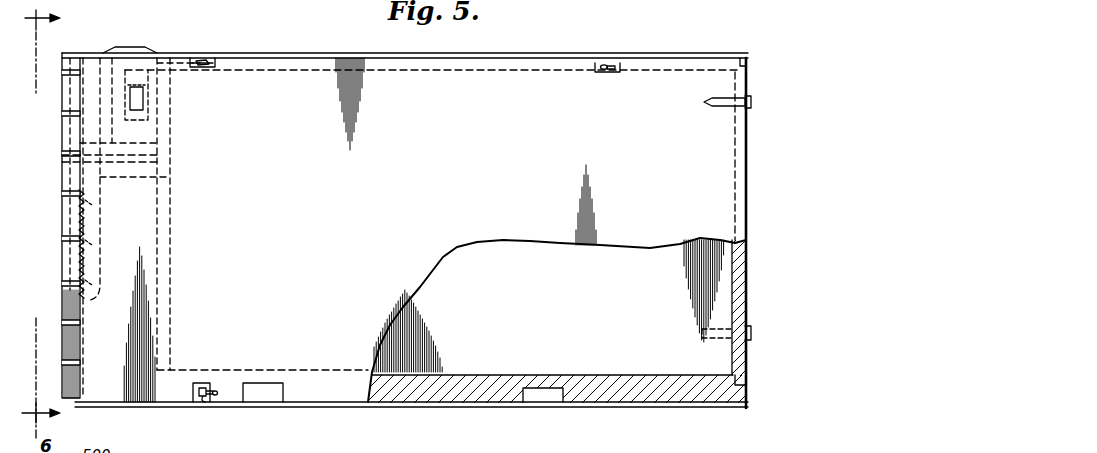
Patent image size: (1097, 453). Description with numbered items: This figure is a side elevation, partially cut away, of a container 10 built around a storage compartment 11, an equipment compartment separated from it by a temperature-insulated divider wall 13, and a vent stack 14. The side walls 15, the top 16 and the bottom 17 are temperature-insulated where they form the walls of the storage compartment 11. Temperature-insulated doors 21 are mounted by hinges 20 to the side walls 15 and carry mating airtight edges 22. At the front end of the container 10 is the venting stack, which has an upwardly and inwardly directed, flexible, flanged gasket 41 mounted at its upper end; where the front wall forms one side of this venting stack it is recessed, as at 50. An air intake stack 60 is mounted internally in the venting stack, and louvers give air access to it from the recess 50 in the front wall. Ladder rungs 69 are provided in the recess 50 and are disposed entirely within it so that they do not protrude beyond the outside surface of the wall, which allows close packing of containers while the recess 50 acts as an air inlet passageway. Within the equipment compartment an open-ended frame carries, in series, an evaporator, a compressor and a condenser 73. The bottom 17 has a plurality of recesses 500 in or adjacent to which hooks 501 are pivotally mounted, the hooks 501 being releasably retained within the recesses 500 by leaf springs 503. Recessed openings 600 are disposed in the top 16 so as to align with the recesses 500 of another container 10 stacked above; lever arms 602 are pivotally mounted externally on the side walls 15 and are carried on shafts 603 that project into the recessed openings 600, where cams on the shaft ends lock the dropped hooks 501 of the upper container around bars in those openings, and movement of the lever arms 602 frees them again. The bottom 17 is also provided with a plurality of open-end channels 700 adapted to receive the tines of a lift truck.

The container 10 is at (507, 95).
The storage compartment 11 is at (465, 331).
The divider wall 13 is at (170, 245).
The vent stack 14 is at (140, 207).
The side walls 15 is at (757, 257).
The top 16 is at (646, 58).
The bottom 17 is at (655, 402).
The hinges 20 is at (750, 105).
The doors 21 is at (742, 308).
The airtight edges 22 is at (742, 62).
The flanged gasket 41 is at (130, 48).
The recess 50 is at (80, 145).
The air intake stack 60 is at (100, 224).
The ladder rungs 69 is at (68, 193).
The condenser 73 is at (150, 118).
The recesses 500 is at (203, 400).
The hooks 501 is at (197, 382).
The leaf springs 503 is at (213, 383).
The recessed openings 600 is at (199, 58).
The lever arms 602 is at (197, 68).
The shafts 603 is at (209, 62).
The open-end channels 700 is at (290, 403).